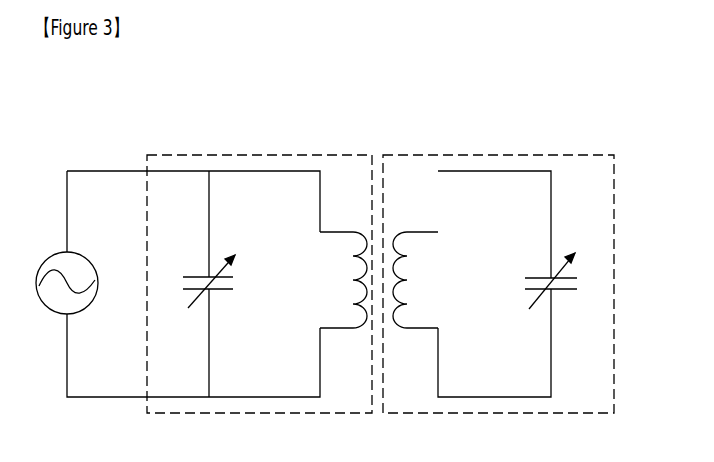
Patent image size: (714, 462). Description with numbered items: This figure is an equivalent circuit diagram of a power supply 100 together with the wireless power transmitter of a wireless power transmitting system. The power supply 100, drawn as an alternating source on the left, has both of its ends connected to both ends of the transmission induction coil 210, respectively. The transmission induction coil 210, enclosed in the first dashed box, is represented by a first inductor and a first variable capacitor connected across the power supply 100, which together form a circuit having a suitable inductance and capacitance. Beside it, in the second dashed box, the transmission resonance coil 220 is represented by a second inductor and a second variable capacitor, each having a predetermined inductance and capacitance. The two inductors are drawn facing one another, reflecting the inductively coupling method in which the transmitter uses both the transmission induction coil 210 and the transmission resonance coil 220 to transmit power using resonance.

The power supply 100 is at (48, 258).
The transmission induction coil 210 is at (287, 152).
The transmission resonance coil 220 is at (444, 152).